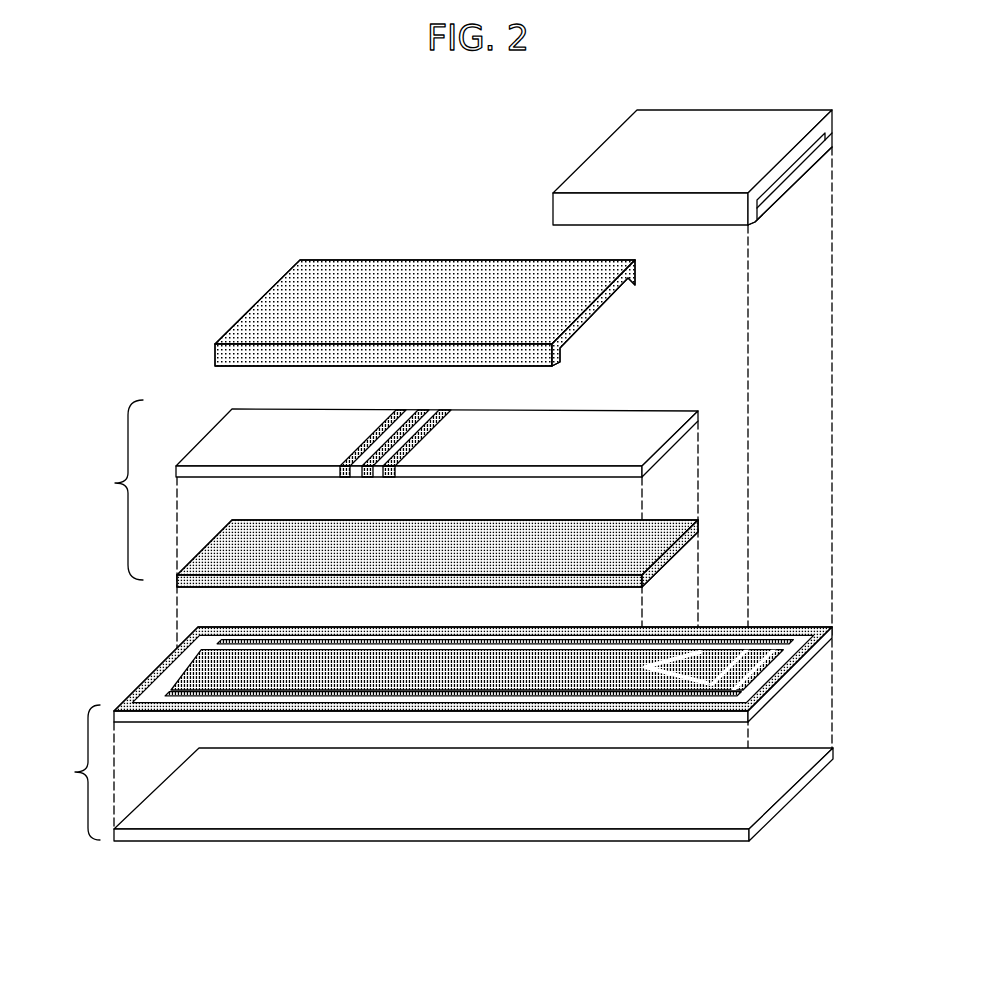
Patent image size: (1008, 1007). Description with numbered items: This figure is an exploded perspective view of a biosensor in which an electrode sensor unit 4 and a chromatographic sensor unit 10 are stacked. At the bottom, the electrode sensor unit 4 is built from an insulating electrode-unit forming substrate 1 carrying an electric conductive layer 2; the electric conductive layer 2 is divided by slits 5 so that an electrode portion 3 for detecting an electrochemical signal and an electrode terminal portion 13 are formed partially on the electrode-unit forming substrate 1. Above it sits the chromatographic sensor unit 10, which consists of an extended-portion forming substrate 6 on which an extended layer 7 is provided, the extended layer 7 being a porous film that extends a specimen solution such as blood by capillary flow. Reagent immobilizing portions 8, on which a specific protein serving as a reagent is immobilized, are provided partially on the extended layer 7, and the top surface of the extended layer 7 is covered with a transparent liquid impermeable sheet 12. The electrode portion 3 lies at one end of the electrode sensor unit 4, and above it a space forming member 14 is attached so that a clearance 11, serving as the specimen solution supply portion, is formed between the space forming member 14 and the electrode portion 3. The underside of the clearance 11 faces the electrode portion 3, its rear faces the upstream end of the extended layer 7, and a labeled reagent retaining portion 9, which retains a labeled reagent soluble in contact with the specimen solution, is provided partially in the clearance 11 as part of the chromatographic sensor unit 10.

The electrode-unit forming substrate 1 is at (807, 778).
The electric conductive layer 2 is at (160, 675).
The electrode portion 3 is at (463, 660).
The electrode sensor unit 4 is at (75, 772).
The slits 5 is at (412, 638).
The extended-portion forming substrate 6 is at (240, 547).
The extended layer 7 is at (442, 404).
The reagent immobilizing portions 8 is at (443, 408).
The labeled reagent retaining portion 9 is at (806, 159).
The chromatographic sensor unit 10 is at (116, 490).
The clearance 11 is at (779, 197).
The transparent liquid impermeable sheet 12 is at (410, 272).
The electrode terminal portion 13 is at (192, 637).
The space forming member 14 is at (707, 174).